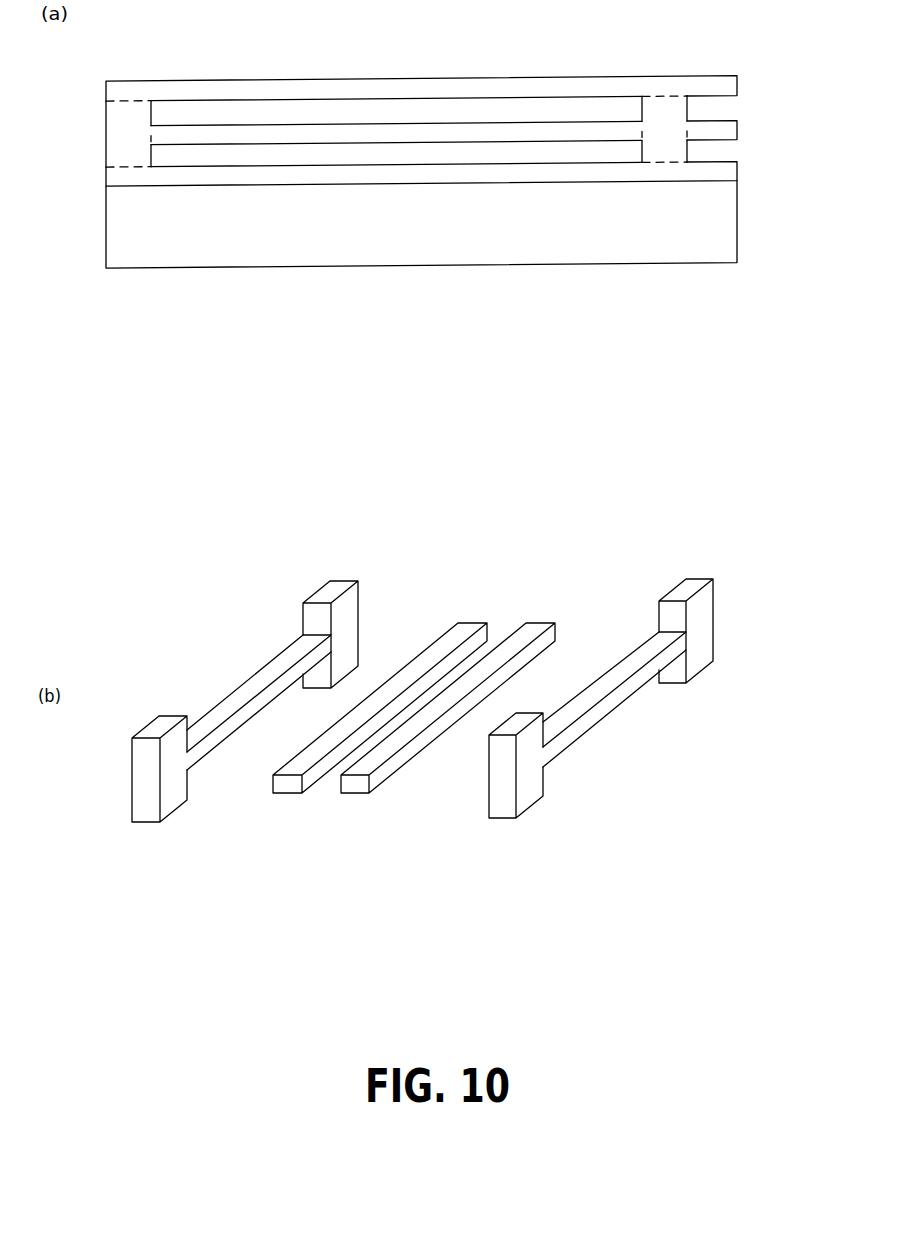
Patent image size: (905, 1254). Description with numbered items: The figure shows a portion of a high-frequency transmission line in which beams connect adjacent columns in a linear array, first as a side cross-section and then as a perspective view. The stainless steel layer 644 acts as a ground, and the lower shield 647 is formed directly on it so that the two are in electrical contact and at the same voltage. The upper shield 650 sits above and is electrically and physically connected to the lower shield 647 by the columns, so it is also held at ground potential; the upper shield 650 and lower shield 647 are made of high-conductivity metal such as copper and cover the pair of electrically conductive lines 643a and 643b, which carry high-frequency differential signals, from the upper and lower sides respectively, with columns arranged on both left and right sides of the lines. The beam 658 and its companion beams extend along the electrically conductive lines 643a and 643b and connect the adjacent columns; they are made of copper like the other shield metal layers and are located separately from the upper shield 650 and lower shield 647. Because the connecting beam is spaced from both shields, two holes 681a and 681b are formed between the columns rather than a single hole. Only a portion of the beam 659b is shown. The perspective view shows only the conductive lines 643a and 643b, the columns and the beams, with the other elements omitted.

The stainless steel layer 644 is at (485, 266).
The lower shield 647 is at (106, 175).
The upper shield 650 is at (640, 77).
The beam 658 is at (262, 668).
The beam 659b is at (729, 120).
The hole 681a is at (388, 98).
The hole 681b is at (420, 164).
The electrically conductive line 643a is at (284, 795).
The electrically conductive line 643b is at (360, 795).